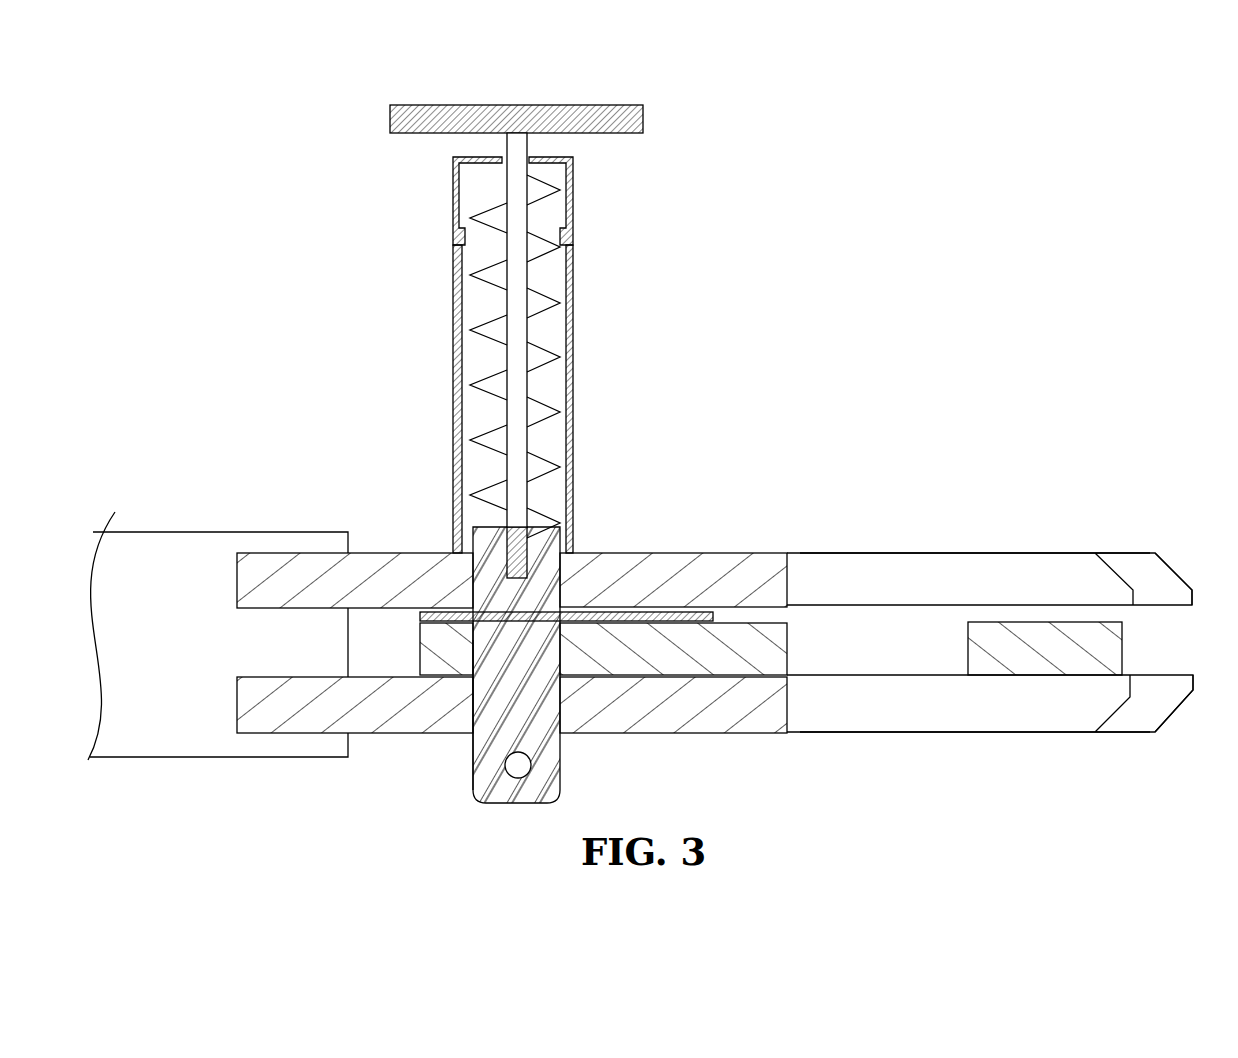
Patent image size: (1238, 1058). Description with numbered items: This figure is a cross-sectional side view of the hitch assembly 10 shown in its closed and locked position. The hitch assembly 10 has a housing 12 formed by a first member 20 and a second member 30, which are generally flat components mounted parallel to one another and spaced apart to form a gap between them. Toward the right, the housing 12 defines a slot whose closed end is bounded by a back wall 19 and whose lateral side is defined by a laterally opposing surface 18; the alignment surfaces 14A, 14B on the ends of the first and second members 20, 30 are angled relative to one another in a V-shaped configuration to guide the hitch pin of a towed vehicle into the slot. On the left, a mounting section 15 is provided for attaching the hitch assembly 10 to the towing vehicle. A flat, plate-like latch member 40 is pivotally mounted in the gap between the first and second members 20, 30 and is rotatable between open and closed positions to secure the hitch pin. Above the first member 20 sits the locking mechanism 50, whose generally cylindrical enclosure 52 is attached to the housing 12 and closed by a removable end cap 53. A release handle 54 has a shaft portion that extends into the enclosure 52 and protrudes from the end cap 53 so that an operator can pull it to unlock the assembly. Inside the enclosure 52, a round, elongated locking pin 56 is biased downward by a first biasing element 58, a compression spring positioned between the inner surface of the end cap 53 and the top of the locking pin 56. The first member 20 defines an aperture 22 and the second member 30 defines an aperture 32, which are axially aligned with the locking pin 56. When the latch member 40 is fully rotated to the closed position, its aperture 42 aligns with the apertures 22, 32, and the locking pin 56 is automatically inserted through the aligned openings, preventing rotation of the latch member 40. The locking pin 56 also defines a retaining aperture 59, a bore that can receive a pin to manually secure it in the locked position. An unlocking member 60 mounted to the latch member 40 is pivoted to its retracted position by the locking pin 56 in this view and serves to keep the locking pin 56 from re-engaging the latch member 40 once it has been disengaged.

The hitch assembly 10 is at (905, 262).
The housing 12 is at (1034, 552).
The alignment surface 14A is at (1163, 580).
The alignment surface 14B is at (1162, 700).
The mounting section 15 is at (162, 735).
The laterally opposing surface 18 is at (937, 582).
The back wall 19 is at (800, 582).
The first member 20 is at (395, 583).
The aperture 22 is at (500, 580).
The second member 30 is at (378, 713).
The aperture 32 is at (480, 705).
The latch member 40 is at (742, 660).
The aperture 42 is at (478, 660).
The locking mechanism 50 is at (556, 325).
The enclosure 52 is at (573, 415).
The end cap 53 is at (573, 205).
The release handle 54 is at (625, 120).
The locking pin 56 is at (540, 562).
The first biasing element 58 is at (553, 300).
The retaining aperture 59 is at (520, 768).
The unlocking member 60 is at (672, 610).